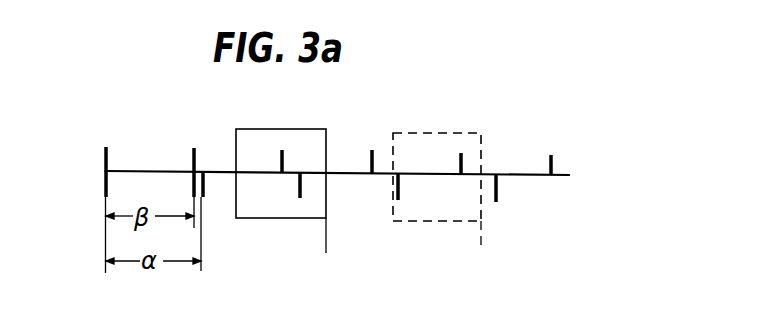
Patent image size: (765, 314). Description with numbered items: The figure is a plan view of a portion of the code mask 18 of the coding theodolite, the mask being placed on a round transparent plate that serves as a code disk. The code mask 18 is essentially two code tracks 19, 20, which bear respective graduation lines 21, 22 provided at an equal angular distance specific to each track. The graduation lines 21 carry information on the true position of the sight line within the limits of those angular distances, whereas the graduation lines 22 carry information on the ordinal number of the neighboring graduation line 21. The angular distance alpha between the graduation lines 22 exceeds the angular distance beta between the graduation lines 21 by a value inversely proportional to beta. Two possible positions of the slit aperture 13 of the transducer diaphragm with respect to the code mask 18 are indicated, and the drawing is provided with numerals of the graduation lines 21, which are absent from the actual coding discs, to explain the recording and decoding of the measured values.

The slit aperture 13 is at (322, 137).
The code mask 18 is at (218, 170).
The code track 19 is at (500, 158).
The code track 20 is at (542, 198).
The graduation line 21 is at (104, 155).
The graduation line 22 is at (104, 182).